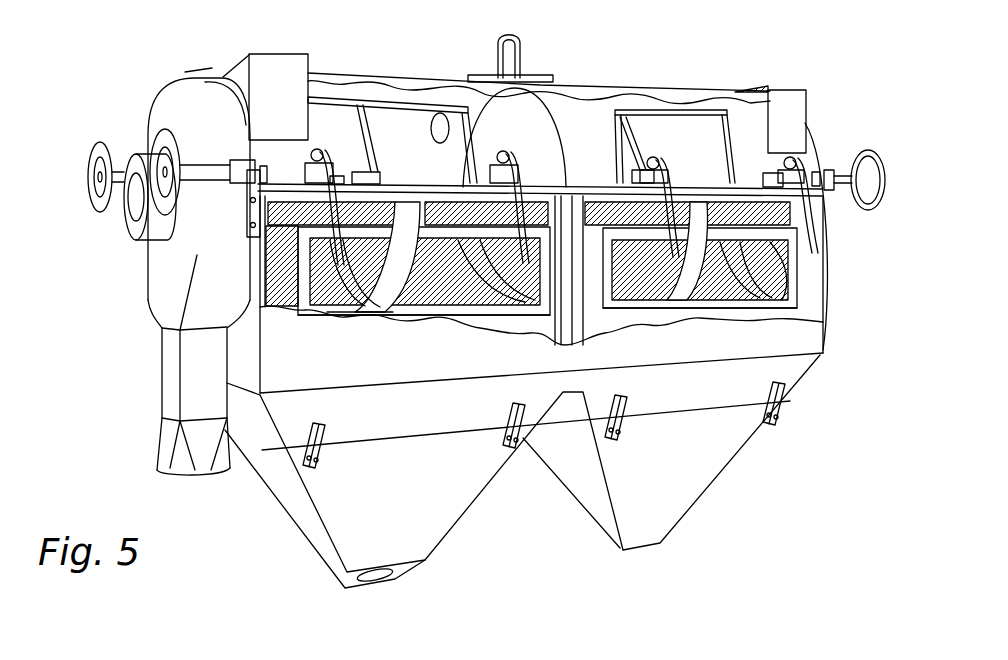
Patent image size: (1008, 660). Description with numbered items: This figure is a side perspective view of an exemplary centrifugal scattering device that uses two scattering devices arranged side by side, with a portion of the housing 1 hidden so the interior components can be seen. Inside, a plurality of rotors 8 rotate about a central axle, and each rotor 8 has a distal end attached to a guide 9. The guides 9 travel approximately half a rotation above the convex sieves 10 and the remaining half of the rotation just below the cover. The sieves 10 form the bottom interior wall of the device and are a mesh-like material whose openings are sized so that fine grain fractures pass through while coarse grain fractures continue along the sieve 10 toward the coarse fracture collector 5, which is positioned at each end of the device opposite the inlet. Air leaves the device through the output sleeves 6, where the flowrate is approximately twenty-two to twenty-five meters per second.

The housing 1 is at (300, 350).
The coarse fracture collector 5 is at (195, 398).
The output sleeve 6 is at (380, 577).
The rotor 8 is at (358, 142).
The guide 9 is at (366, 142).
The sieve 10 is at (412, 250).